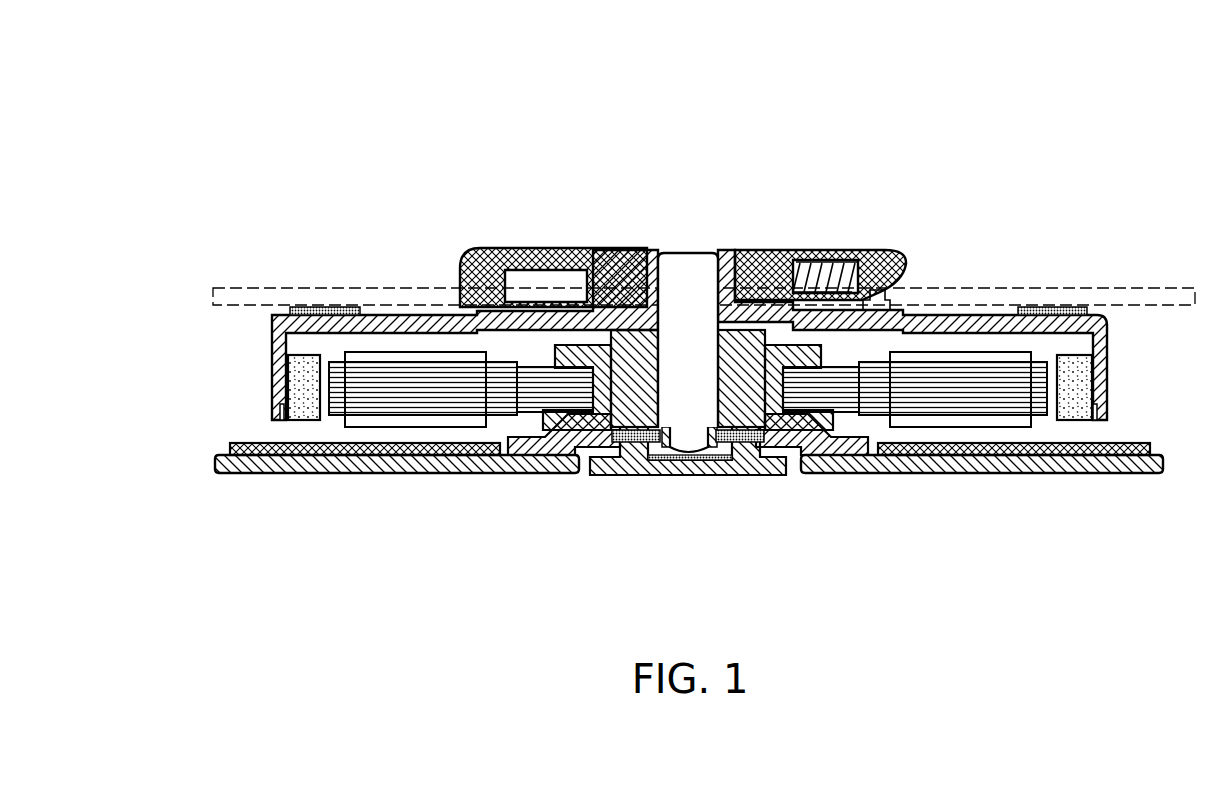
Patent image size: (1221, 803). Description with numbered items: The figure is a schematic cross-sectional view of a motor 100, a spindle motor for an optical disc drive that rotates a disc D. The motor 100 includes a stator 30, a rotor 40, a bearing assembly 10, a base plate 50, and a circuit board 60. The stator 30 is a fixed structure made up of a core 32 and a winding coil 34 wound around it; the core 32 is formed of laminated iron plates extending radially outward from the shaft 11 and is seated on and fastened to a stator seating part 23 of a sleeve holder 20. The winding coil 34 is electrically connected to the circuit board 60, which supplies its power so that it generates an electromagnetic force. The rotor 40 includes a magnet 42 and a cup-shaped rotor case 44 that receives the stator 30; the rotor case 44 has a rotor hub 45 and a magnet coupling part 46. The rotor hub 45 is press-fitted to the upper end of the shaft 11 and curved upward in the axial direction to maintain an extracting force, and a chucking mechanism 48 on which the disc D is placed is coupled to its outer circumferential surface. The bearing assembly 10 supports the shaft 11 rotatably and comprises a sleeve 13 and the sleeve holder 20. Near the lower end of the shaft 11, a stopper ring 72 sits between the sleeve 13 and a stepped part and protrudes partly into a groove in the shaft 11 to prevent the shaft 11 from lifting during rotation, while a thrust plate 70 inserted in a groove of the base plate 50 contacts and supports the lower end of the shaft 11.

The motor 100 is at (932, 143).
The disc D is at (957, 288).
The bearing assembly 10 is at (547, 558).
The shaft 11 is at (688, 415).
The sleeve 13 is at (630, 452).
The sleeve holder 20 is at (573, 432).
The stator seating part 23 is at (843, 438).
The stator 30 is at (950, 537).
The core 32 is at (1043, 407).
The winding coil 34 is at (952, 423).
The rotor 40 is at (266, 315).
The magnet 42 is at (297, 386).
The rotor case 44 is at (457, 157).
The rotor hub 45 is at (650, 253).
The magnet coupling part 46 is at (330, 307).
The chucking mechanism 48 is at (766, 246).
The base plate 50 is at (907, 478).
The circuit board 60 is at (367, 474).
The thrust plate 70 is at (715, 457).
The stopper ring 72 is at (755, 455).